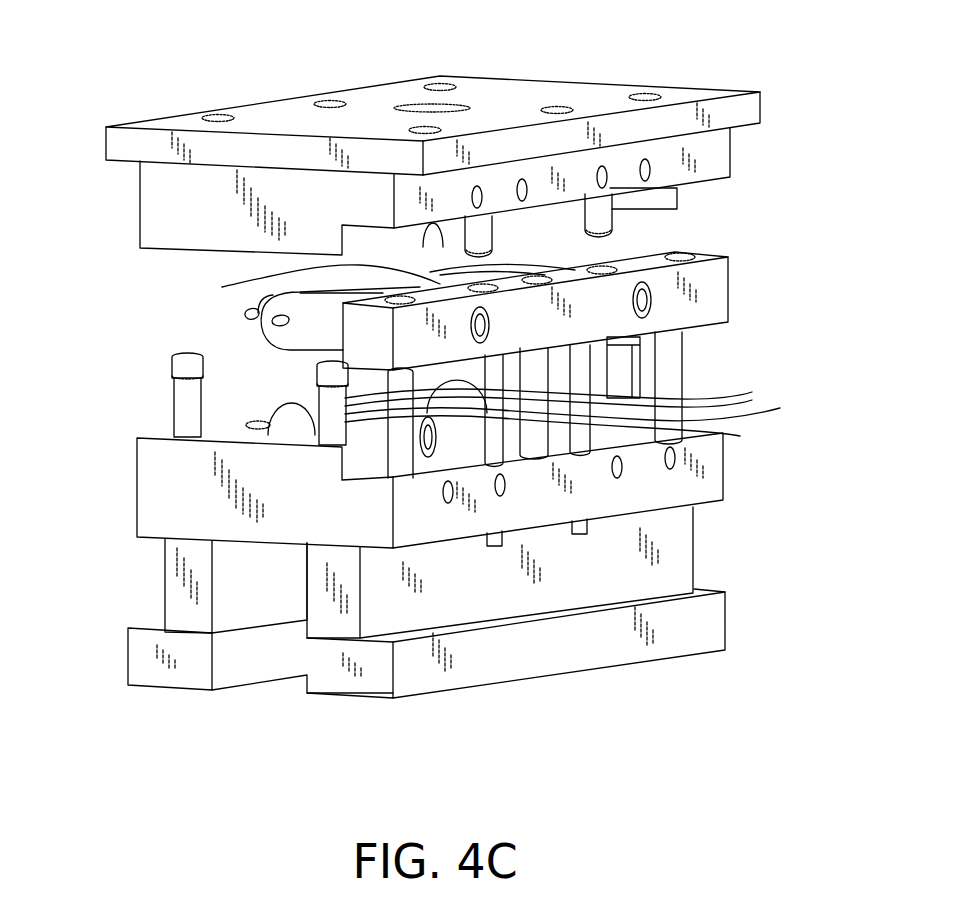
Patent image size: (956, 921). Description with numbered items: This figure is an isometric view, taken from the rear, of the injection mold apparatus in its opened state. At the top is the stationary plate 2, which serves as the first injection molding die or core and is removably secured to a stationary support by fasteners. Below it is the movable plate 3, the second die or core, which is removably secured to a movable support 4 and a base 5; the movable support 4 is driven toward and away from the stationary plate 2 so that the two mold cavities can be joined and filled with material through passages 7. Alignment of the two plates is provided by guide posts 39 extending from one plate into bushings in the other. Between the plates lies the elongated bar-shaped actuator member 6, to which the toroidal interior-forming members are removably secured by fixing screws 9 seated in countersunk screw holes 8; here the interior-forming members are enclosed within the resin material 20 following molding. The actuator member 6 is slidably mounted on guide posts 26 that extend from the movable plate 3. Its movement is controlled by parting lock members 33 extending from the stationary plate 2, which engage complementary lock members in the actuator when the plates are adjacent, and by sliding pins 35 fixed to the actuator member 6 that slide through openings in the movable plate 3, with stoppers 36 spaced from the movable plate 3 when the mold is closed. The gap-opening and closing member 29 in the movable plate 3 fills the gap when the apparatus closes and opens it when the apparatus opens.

The stationary plate 2 is at (167, 202).
The movable plate 3 is at (717, 488).
The movable support 4 is at (673, 555).
The base 5 is at (703, 630).
The actuator member 6 is at (703, 253).
The passages 7 is at (683, 456).
The countersunk screw holes 8 is at (652, 292).
The fixing screws 9 is at (652, 310).
The resin material 20 is at (222, 287).
The guide posts 26 is at (385, 456).
The gap-opening and closing member 29 is at (297, 413).
The parting lock members 33 is at (478, 228).
The sliding pins 35 is at (640, 405).
The stoppers 36 is at (575, 537).
The guide posts 39 is at (181, 402).